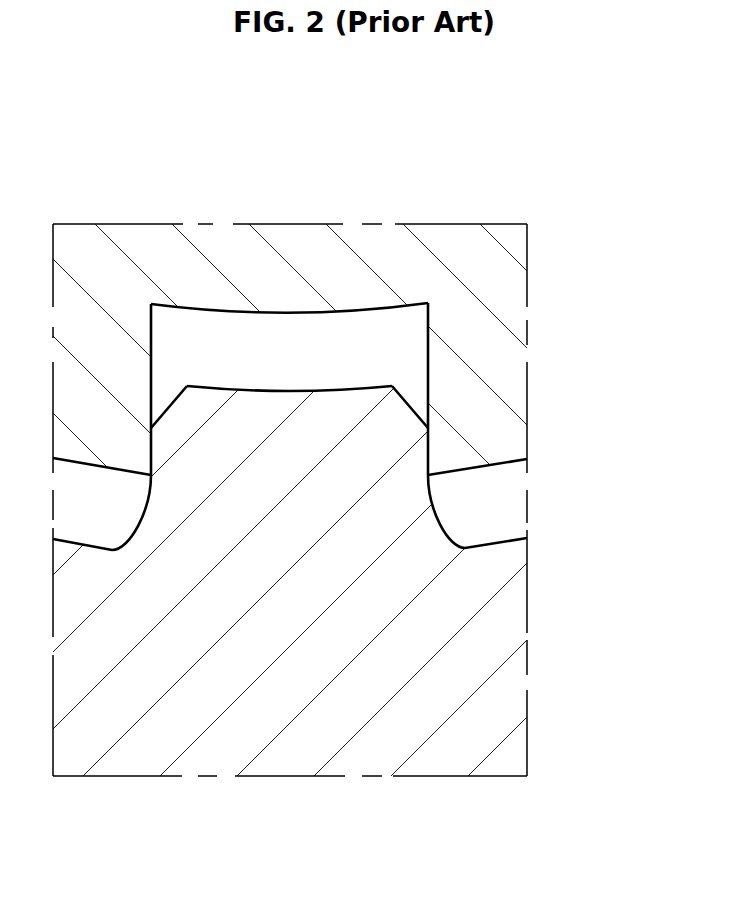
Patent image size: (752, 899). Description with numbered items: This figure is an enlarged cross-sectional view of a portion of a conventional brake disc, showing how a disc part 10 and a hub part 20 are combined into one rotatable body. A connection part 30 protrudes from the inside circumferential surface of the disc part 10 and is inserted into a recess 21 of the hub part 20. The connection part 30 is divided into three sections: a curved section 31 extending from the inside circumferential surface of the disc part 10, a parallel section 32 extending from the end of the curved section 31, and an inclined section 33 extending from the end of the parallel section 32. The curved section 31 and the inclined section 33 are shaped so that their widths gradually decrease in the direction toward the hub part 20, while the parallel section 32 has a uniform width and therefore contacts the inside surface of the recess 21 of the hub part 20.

The disc part 10 is at (502, 704).
The hub part 20 is at (386, 252).
The recess 21 is at (291, 355).
The connection part 30 is at (330, 465).
The curved section 31 is at (443, 520).
The parallel section 32 is at (430, 455).
The inclined section 33 is at (410, 403).